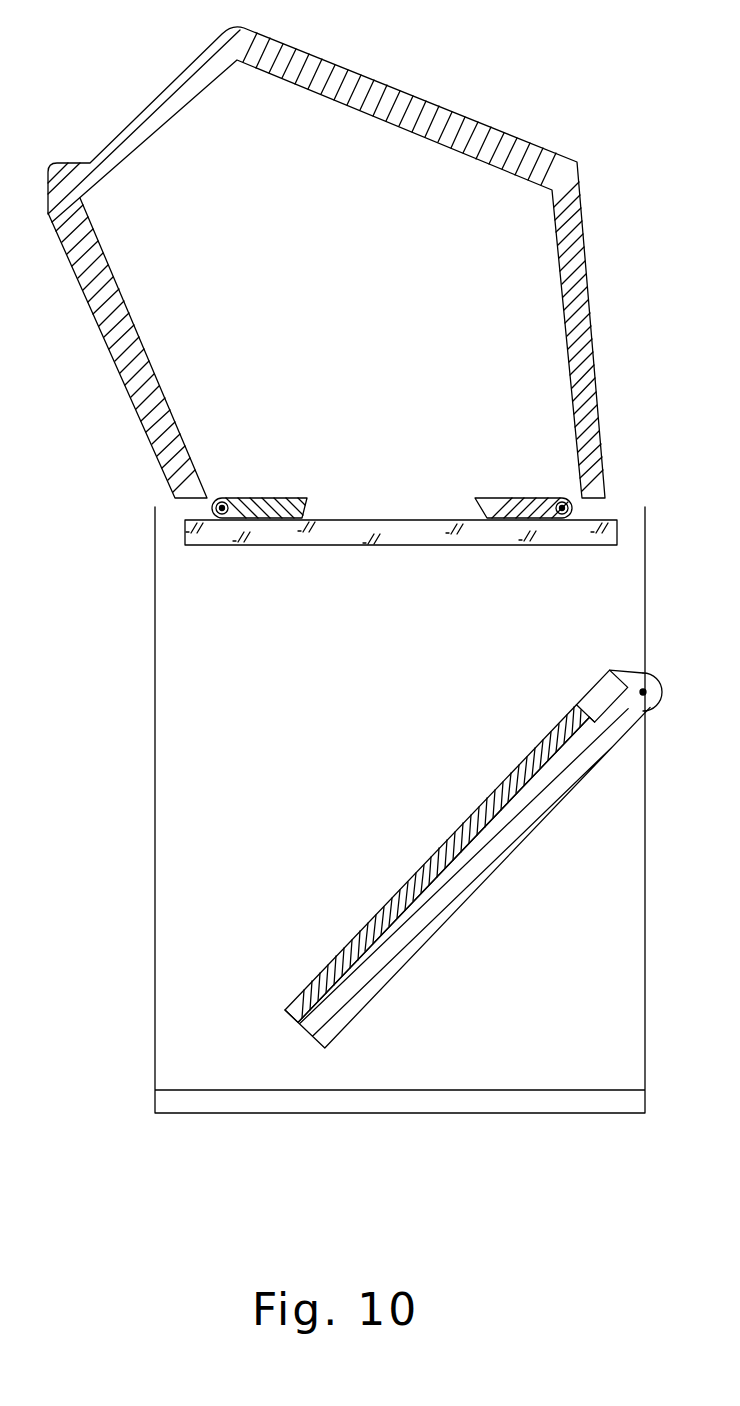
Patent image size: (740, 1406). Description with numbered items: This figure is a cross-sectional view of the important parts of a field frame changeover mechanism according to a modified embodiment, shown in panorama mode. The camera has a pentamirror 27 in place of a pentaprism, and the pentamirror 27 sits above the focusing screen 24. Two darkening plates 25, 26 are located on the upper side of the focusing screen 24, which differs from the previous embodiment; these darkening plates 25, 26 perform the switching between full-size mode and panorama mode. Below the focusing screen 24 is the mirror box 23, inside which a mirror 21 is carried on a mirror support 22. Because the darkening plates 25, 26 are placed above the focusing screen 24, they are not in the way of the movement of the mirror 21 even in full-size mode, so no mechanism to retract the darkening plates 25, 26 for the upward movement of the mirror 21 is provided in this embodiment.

The mirror 21 is at (442, 850).
The mirror support 22 is at (487, 877).
The mirror box 23 is at (497, 1115).
The focusing screen 24 is at (372, 547).
The darkening plate 25 is at (272, 497).
The darkening plate 26 is at (515, 497).
The pentamirror 27 is at (414, 95).